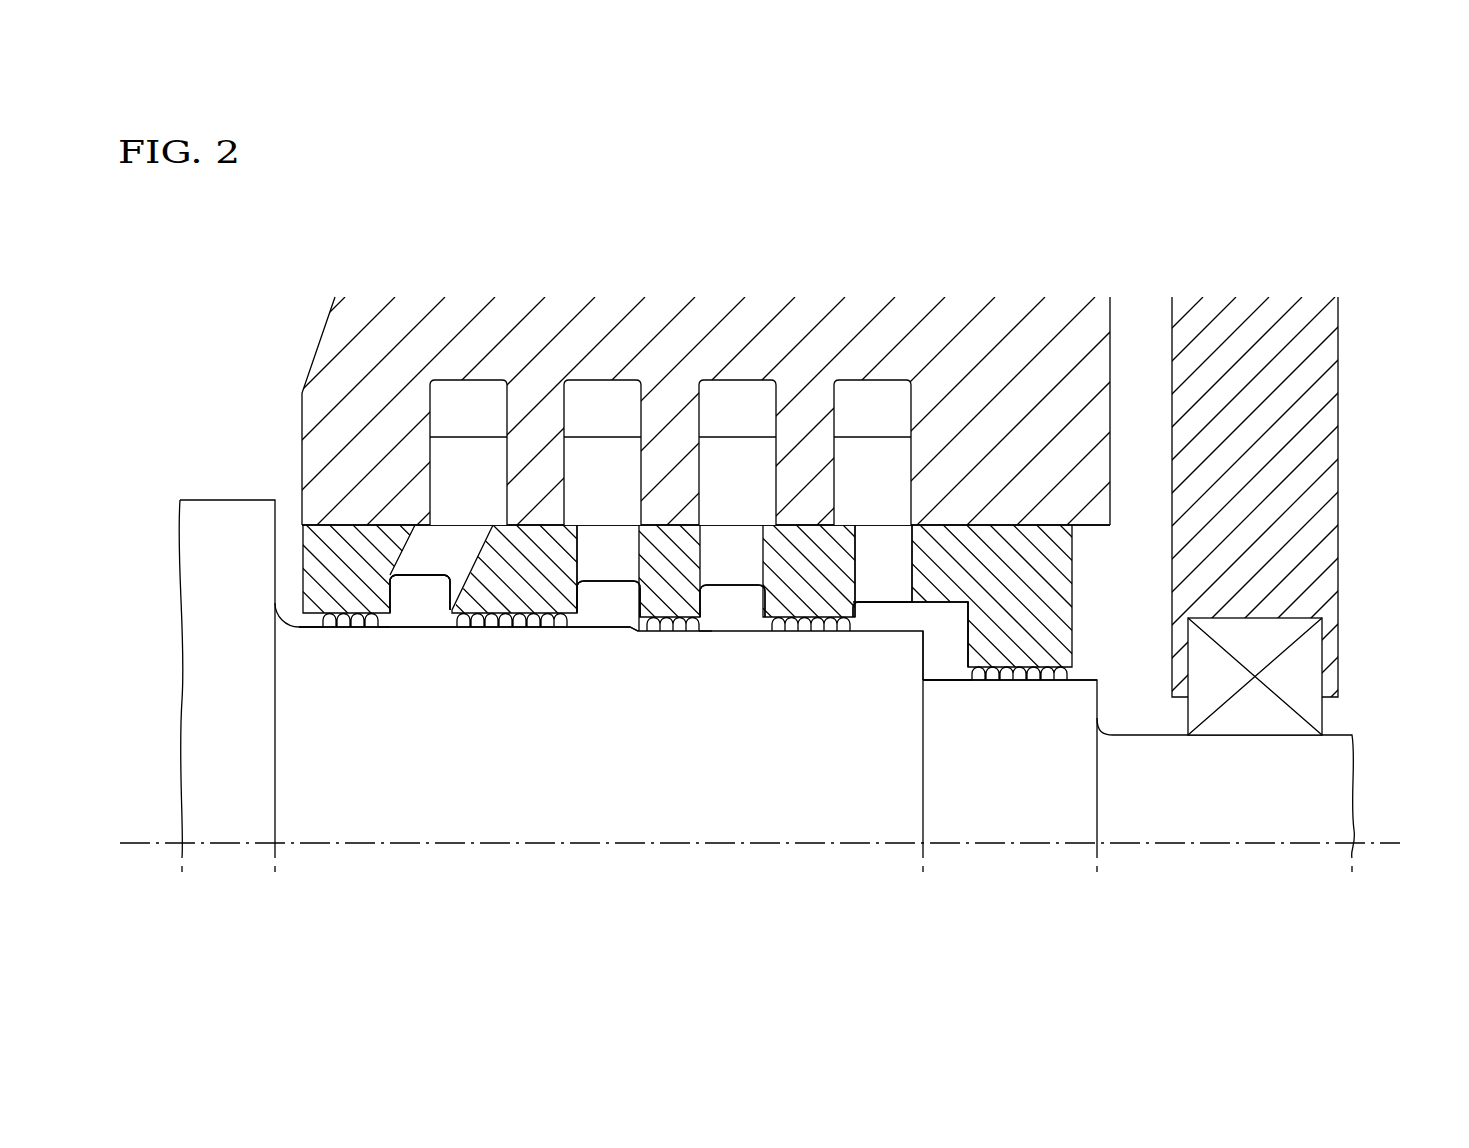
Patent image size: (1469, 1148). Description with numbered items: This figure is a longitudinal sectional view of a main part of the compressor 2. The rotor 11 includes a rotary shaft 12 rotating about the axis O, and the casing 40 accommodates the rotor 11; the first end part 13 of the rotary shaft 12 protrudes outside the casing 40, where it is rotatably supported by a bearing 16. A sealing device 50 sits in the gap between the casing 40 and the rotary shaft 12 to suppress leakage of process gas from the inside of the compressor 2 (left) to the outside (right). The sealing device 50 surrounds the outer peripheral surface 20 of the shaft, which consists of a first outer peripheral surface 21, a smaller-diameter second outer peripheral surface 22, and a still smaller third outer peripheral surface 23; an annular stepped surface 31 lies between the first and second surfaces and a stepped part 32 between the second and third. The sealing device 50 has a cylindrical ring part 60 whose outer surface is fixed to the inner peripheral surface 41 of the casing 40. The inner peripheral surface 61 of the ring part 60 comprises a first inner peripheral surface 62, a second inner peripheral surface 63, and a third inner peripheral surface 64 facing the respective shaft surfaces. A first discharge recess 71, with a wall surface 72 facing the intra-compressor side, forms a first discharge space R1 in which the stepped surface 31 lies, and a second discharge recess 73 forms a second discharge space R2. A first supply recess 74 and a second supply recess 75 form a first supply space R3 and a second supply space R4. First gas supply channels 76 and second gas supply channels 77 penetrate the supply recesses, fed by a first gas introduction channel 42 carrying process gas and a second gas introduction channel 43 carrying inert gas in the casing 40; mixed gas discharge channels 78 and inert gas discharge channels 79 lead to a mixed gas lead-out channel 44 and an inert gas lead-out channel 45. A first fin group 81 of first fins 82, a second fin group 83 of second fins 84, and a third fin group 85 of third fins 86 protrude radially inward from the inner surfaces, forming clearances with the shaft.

The compressor 2 is at (226, 262).
The axis O is at (1372, 842).
The rotor 11 is at (208, 490).
The rotary shaft 12 is at (190, 700).
The first end part 13 is at (1412, 748).
The bearing 16 is at (1308, 656).
The outer peripheral surface 20 is at (290, 606).
The first outer peripheral surface 21 is at (430, 618).
The second outer peripheral surface 22 is at (866, 624).
The third outer peripheral surface 23 is at (1085, 670).
The stepped surface 31 is at (634, 634).
The stepped part 32 is at (928, 680).
The casing 40 is at (340, 338).
The inner peripheral surface 41 is at (348, 542).
The first gas introduction channel 42 is at (435, 441).
The second gas introduction channel 43 is at (705, 442).
The mixed gas lead-out channel 44 is at (570, 442).
The inert gas lead-out channel 45 is at (839, 442).
The sealing device 50 is at (1092, 545).
The ring part 60 is at (1057, 573).
The inner peripheral surface 61 is at (315, 630).
The first inner peripheral surface 62 is at (382, 630).
The second inner peripheral surface 63 is at (702, 642).
The third inner peripheral surface 64 is at (970, 694).
The first discharge recess 71 is at (580, 618).
The wall surface 72 is at (627, 614).
The second discharge recess 73 is at (957, 646).
The first supply recess 74 is at (398, 600).
The second supply recess 75 is at (762, 610).
The first gas supply channel 76 is at (425, 535).
The second gas supply channel 77 is at (708, 540).
The mixed gas discharge channel 78 is at (578, 540).
The inert gas discharge channel 79 is at (905, 545).
The first fin group 81 is at (445, 689).
The first fin 82 is at (480, 642).
The second fin group 83 is at (748, 693).
The second fin 84 is at (670, 644).
The third fin group 85 is at (1026, 742).
The third fin 86 is at (1014, 694).
The first discharge space R1 is at (623, 610).
The second discharge space R2 is at (918, 630).
The first supply space R3 is at (444, 608).
The second supply space R4 is at (744, 615).